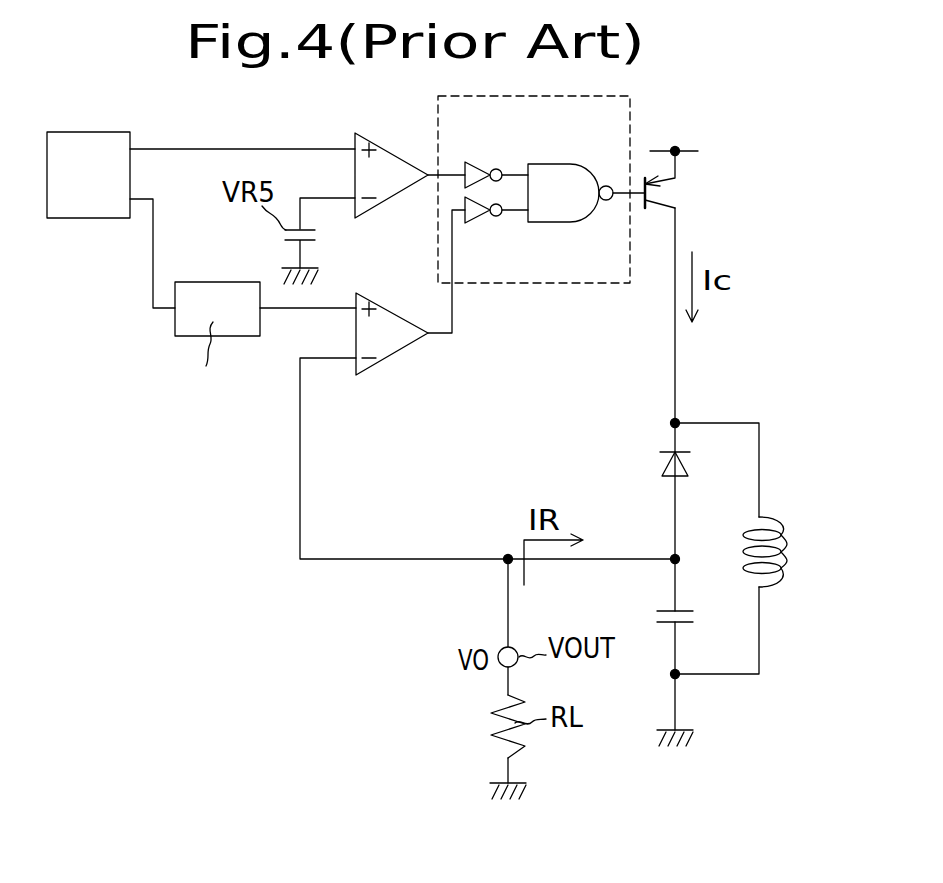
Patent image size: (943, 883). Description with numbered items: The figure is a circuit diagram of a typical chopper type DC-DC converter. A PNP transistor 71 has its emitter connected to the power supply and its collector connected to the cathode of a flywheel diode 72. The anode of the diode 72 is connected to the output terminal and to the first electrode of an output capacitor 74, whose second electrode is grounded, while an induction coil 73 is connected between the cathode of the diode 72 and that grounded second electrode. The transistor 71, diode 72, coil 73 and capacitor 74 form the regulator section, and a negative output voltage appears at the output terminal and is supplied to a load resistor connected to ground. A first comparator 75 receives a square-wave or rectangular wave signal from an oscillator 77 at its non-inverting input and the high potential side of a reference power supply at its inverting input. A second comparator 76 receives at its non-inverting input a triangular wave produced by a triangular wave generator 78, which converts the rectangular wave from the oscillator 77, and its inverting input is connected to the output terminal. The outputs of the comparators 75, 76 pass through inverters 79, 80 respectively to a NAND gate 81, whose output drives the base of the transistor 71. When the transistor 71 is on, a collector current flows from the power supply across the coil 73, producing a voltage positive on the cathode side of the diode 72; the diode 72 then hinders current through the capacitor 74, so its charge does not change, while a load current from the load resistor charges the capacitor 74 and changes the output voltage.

The PNP transistor 71 is at (660, 184).
The flywheel diode 72 is at (690, 462).
The induction coil 73 is at (771, 518).
The output capacitor 74 is at (688, 611).
The first comparator 75 is at (385, 144).
The second comparator 76 is at (384, 308).
The oscillator 77 is at (112, 132).
The triangular wave generator 78 is at (210, 282).
The inverter 79 is at (476, 162).
The inverter 80 is at (472, 218).
The NAND gate 81 is at (548, 164).